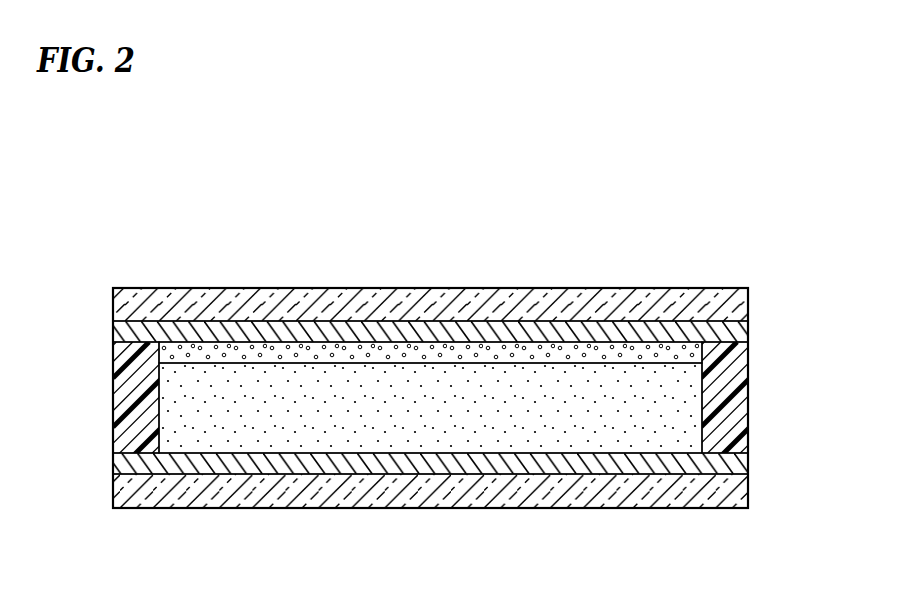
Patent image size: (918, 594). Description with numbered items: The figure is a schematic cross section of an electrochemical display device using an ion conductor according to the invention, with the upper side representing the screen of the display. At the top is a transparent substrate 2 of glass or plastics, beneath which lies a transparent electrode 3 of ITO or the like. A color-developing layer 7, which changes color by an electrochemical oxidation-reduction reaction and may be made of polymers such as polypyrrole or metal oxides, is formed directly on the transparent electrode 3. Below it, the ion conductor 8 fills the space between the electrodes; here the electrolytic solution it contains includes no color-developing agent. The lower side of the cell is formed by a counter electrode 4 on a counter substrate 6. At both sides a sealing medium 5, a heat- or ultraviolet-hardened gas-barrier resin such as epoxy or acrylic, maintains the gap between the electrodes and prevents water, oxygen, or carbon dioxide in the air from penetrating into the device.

The transparent substrate 2 is at (628, 303).
The transparent electrode 3 is at (735, 338).
The counter electrode 4 is at (735, 467).
The sealing medium 5 is at (733, 392).
The counter substrate 6 is at (495, 487).
The color-developing layer 7 is at (477, 350).
The ion conductor 8 is at (348, 362).